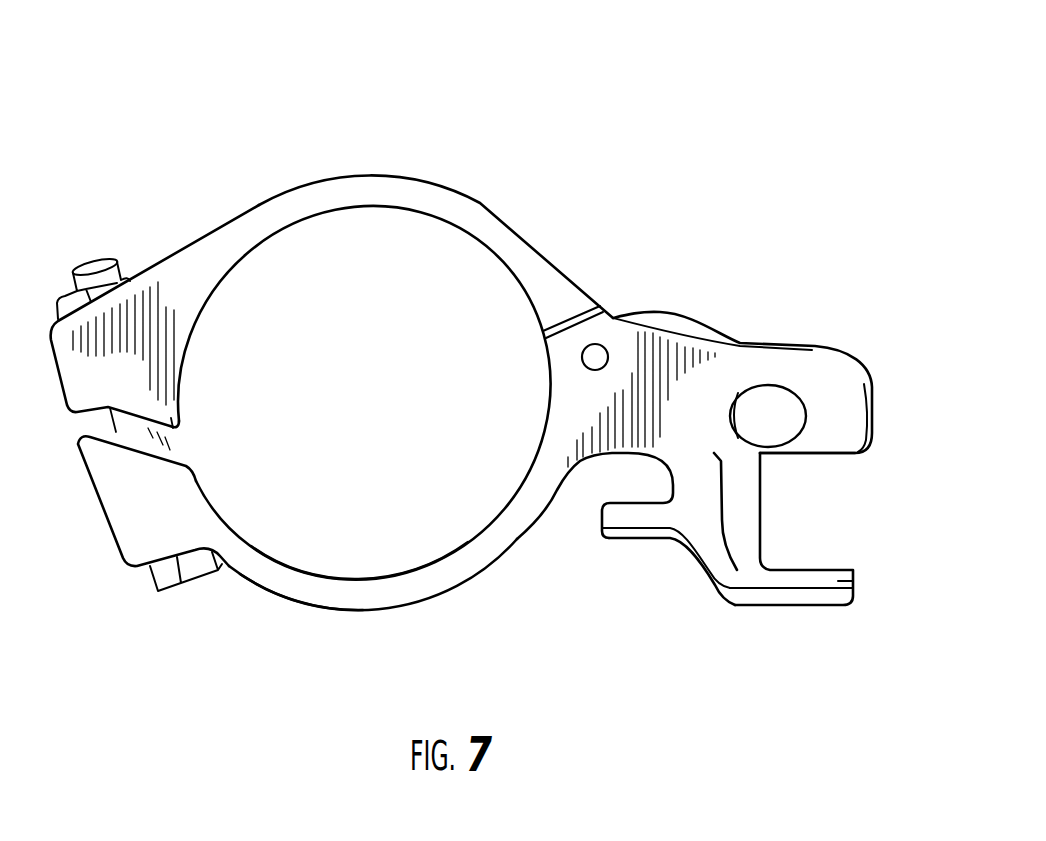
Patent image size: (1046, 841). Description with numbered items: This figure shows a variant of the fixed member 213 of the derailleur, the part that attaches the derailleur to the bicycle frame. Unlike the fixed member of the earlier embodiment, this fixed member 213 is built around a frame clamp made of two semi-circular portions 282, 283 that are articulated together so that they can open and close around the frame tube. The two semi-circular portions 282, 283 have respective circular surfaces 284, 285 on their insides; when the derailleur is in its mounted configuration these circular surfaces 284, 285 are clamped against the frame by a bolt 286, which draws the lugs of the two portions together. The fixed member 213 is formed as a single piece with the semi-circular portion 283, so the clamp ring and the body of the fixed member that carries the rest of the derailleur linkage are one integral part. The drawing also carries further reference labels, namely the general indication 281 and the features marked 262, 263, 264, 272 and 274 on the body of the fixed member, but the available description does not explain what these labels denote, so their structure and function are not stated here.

The clamp 281 is at (423, 137).
The semi-circular portion 282 is at (269, 212).
The semi-circular portion 283 is at (287, 588).
The circular surface 284 is at (367, 208).
The circular surface 285 is at (252, 546).
The bolt 286 is at (153, 592).
The fixed member 213 is at (722, 344).
The end portion of head 262 is at (882, 435).
The lower surface of head 263 is at (843, 458).
The flange 264 is at (855, 582).
The notch 272 is at (590, 492).
The tab 274 is at (630, 522).